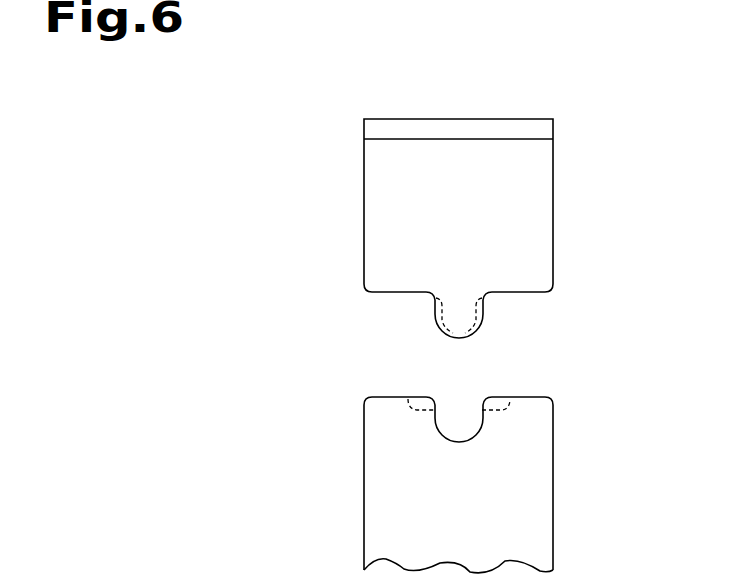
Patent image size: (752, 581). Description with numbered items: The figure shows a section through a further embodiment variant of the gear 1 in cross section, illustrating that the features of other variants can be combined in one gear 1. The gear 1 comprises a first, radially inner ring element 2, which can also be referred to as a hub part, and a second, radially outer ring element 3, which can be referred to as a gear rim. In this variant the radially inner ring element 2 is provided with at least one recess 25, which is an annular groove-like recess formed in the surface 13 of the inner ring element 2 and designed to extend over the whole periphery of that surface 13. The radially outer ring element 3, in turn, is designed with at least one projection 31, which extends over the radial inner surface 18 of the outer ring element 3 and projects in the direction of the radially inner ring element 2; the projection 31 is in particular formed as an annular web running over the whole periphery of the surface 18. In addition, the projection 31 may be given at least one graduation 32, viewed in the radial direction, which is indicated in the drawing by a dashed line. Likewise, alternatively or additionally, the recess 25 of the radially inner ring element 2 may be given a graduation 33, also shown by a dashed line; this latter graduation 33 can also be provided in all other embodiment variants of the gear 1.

The gear 1 is at (333, 142).
The first, radially inner ring element 2 is at (360, 505).
The second, radially outer ring element 3 is at (523, 175).
The surface 13 is at (396, 398).
The radial inner surface 18 is at (400, 294).
The recess 25 is at (458, 416).
The projection 31 is at (458, 313).
The graduation 32 is at (485, 318).
The graduation 33 is at (515, 411).